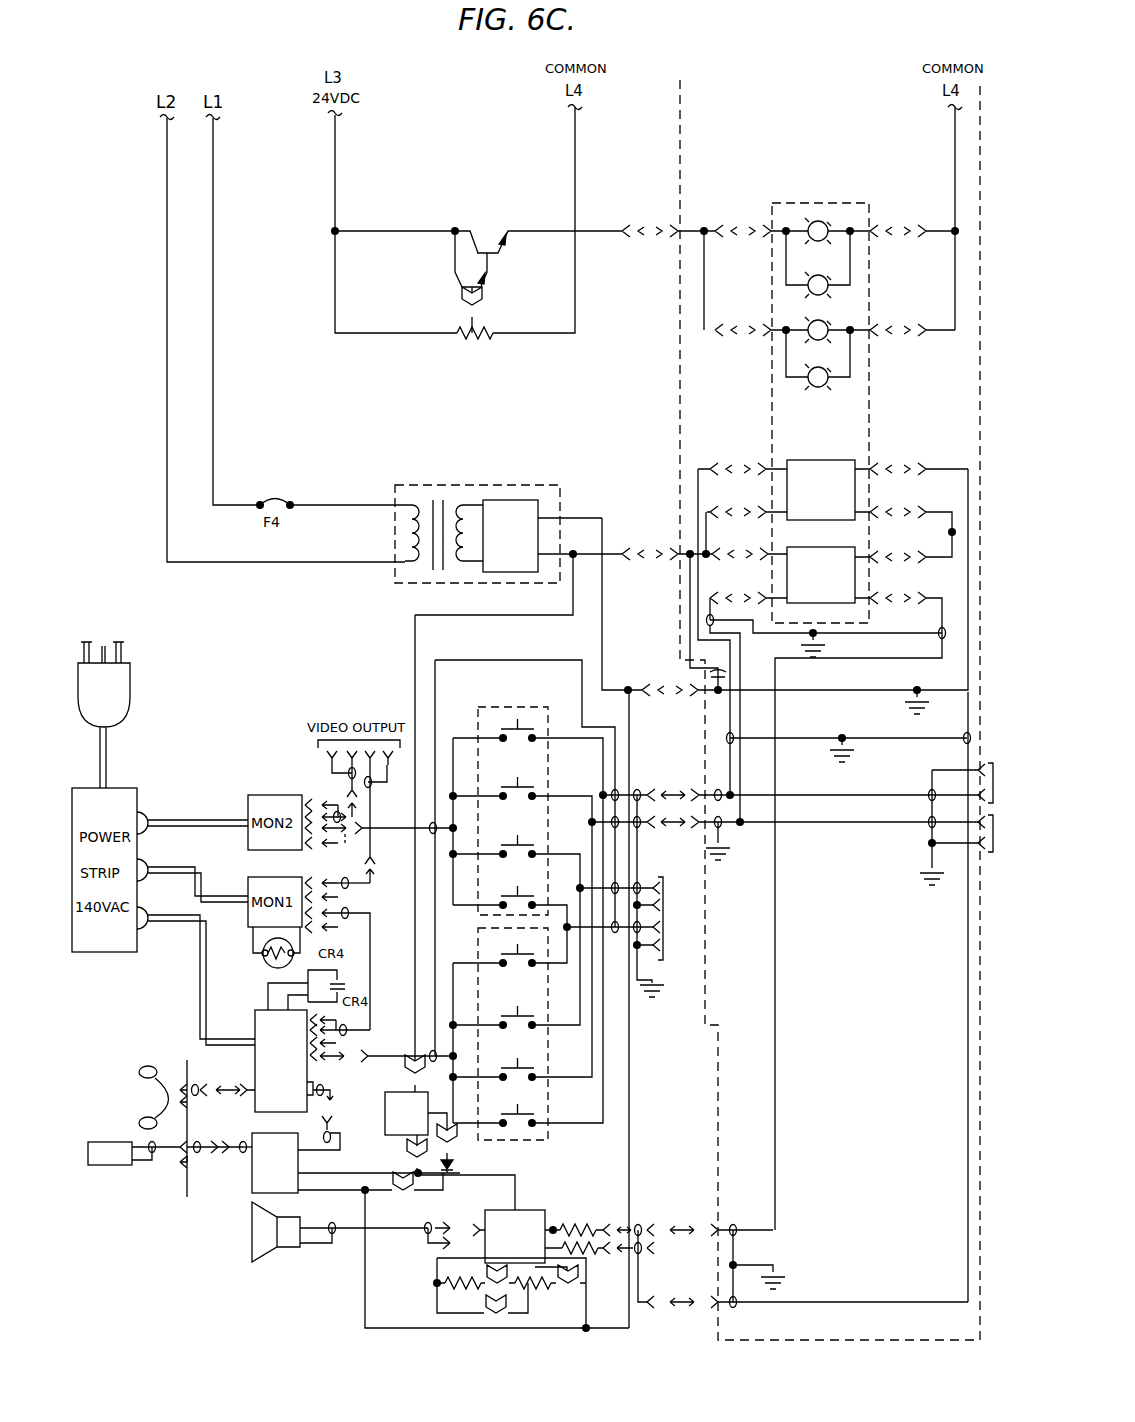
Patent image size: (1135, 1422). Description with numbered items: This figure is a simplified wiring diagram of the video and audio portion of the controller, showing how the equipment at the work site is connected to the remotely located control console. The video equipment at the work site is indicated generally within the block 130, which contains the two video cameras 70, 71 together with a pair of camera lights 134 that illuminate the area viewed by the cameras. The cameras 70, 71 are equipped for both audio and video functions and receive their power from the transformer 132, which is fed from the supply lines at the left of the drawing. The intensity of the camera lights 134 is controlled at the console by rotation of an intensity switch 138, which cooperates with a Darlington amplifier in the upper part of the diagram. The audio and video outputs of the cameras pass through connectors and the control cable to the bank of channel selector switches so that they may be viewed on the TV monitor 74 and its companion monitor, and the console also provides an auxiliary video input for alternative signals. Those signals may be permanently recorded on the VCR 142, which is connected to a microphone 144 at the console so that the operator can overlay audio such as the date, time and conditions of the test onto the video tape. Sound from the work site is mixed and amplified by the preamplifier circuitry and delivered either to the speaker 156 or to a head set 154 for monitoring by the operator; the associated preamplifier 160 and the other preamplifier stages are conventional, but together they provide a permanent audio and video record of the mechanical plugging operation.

The transformer 132 is at (501, 240).
The intensity switch 138 is at (487, 329).
The video equipment block 130 is at (843, 204).
The camera lights 134 is at (853, 305).
The video camera 70 is at (822, 460).
The video camera 71 is at (823, 548).
The TV monitor 74 is at (530, 706).
The VCR 142 is at (255, 1016).
The head set 154 is at (150, 1066).
The microphone 144 is at (105, 1165).
The speaker 156 is at (252, 1245).
The preamplifier 160 is at (593, 1212).